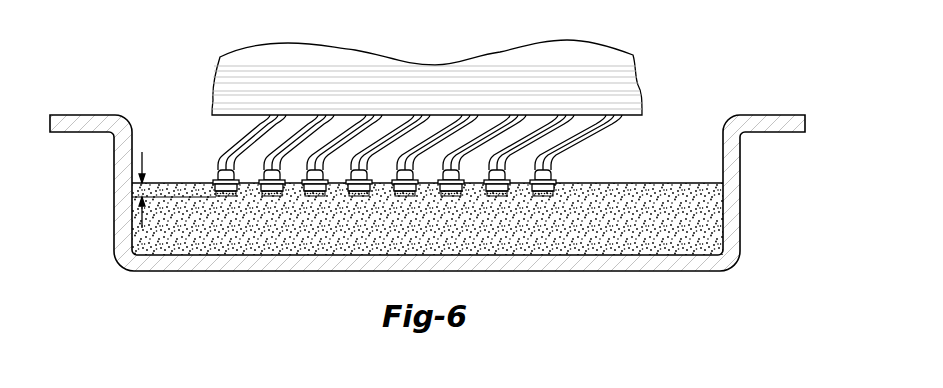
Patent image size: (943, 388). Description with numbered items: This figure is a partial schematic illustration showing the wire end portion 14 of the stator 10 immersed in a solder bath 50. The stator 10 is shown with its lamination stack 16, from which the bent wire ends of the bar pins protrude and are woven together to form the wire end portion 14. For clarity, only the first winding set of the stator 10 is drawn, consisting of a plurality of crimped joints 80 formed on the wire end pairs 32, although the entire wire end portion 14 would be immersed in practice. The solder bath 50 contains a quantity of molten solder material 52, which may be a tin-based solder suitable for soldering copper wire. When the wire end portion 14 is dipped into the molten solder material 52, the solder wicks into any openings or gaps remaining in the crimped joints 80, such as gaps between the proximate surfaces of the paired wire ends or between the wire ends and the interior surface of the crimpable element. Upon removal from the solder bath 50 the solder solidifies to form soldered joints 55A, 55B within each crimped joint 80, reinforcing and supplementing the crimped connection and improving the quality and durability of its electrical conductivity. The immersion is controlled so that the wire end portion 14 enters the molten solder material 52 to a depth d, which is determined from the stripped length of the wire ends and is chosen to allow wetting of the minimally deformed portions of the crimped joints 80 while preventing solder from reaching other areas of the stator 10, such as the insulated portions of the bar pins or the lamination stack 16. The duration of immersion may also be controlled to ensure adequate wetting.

The stator 10 is at (413, 135).
The wire end portion 14 is at (645, 127).
The lamination stack 16 is at (622, 70).
The wire end pairs 32 is at (276, 197).
The solder bath 50 is at (770, 189).
The molten solder material 52 is at (697, 195).
The soldered joint 55A is at (326, 199).
The soldered joint 55B is at (306, 198).
The crimped joint 80 is at (257, 197).
The depth of immersion d is at (142, 191).